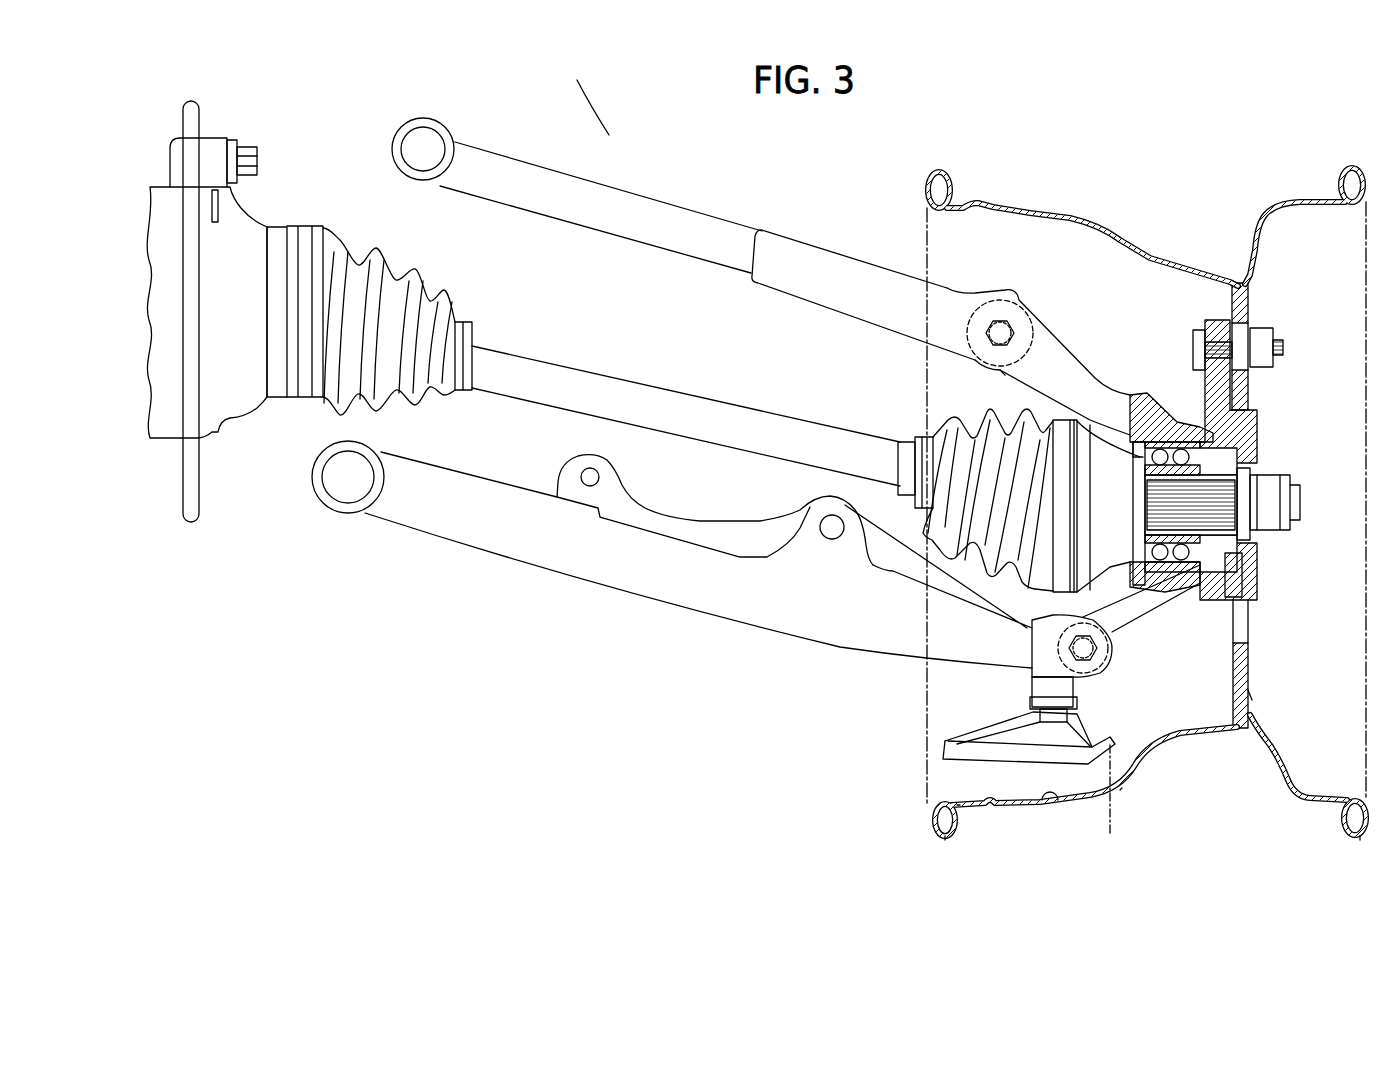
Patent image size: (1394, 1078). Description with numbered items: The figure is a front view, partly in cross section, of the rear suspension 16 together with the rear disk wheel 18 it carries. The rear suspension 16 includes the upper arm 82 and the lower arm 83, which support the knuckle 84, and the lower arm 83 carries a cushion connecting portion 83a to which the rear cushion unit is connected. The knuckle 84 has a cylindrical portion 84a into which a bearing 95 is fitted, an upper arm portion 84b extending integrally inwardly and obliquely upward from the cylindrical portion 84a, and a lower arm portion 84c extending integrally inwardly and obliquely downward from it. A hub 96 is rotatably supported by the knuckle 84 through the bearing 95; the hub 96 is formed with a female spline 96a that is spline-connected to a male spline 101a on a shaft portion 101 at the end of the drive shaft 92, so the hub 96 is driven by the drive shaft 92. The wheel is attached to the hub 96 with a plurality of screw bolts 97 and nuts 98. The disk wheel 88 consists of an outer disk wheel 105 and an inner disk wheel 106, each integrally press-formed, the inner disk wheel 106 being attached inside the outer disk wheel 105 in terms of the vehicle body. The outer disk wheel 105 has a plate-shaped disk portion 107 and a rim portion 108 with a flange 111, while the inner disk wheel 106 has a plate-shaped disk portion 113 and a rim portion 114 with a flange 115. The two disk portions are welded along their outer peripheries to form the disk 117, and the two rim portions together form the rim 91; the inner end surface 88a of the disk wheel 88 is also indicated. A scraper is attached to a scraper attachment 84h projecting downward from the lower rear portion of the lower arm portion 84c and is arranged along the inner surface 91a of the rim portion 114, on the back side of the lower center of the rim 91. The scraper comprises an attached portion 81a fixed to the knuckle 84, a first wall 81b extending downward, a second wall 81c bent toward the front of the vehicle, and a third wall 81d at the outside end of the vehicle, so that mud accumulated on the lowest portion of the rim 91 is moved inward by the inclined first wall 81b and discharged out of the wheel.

The rear suspension 16 is at (597, 133).
The rear disk wheel 18 is at (1136, 138).
The upper arm 82 is at (672, 210).
The lower arm 83 is at (580, 594).
The cushion connecting portion 83a is at (803, 532).
The knuckle 84 is at (1062, 330).
The cylindrical portion 84a is at (1187, 594).
The upper arm portion 84b is at (1092, 375).
The lower arm portion 84c is at (1120, 640).
The scraper attachment 84h is at (1035, 673).
The attached portion 81a is at (1030, 683).
The first wall 81b is at (993, 737).
The second wall 81c is at (953, 753).
The third wall 81d is at (1110, 804).
The disk wheel 88 is at (1213, 239).
The inner end surface 88a is at (932, 803).
The rim 91 is at (1031, 820).
The inner surface 91a is at (1050, 808).
The drive shaft 92 is at (650, 395).
The bearing 95 is at (1177, 417).
The hub 96 is at (1230, 450).
The female spline 96a is at (1232, 562).
The screw bolt 97 is at (1285, 347).
The nut 98 is at (1263, 327).
The shaft portion 101 is at (1113, 540).
The male spline 101a is at (1252, 550).
The outer disk wheel 105 is at (1291, 197).
The inner disk wheel 106 is at (1013, 192).
The disk portion 107 is at (1250, 672).
The rim portion 108 is at (1320, 805).
The flange 111 is at (1361, 840).
The disk portion 113 is at (1228, 700).
The rim portion 114 is at (1133, 762).
The flange 115 is at (950, 840).
The disk 117 is at (1272, 708).